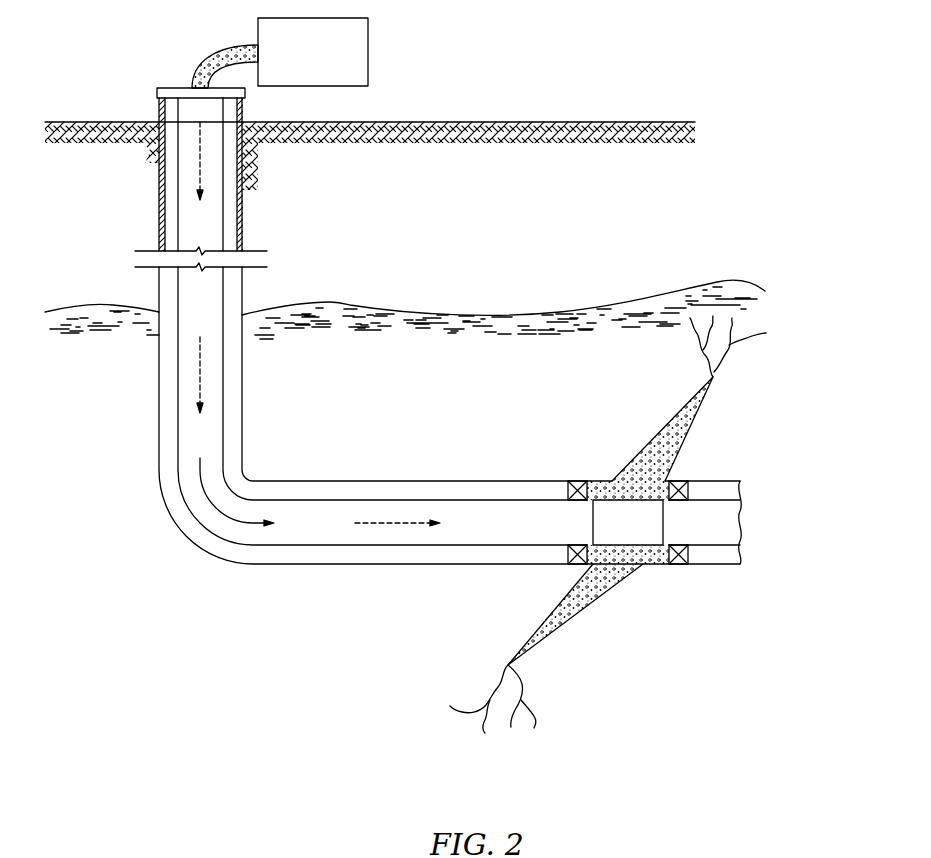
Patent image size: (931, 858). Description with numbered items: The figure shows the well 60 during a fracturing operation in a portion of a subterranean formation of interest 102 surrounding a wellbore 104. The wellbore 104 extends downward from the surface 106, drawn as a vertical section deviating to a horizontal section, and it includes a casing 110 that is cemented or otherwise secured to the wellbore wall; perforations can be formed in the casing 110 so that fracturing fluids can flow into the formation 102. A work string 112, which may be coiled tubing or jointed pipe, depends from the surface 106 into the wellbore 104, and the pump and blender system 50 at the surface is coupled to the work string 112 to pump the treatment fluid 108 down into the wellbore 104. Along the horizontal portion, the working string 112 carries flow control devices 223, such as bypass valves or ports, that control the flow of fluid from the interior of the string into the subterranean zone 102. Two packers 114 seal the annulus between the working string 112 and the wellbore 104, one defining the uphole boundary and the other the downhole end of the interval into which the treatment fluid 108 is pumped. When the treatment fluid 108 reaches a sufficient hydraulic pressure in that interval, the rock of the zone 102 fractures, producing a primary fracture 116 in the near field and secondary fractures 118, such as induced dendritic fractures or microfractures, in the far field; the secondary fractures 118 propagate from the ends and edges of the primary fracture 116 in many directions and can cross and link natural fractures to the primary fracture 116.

The pump and blender system 50 is at (325, 67).
The well 60 is at (167, 528).
The subterranean formation of interest 102 is at (413, 366).
The wellbore 104 is at (168, 180).
The surface 106 is at (577, 121).
The treatment fluid 108 is at (217, 53).
The casing 110 is at (158, 210).
The work string 112 is at (178, 418).
The packers 114 is at (580, 481).
The primary fracture 116 is at (646, 430).
The secondary fractures 118 is at (751, 349).
The flow control devices 223 is at (645, 536).